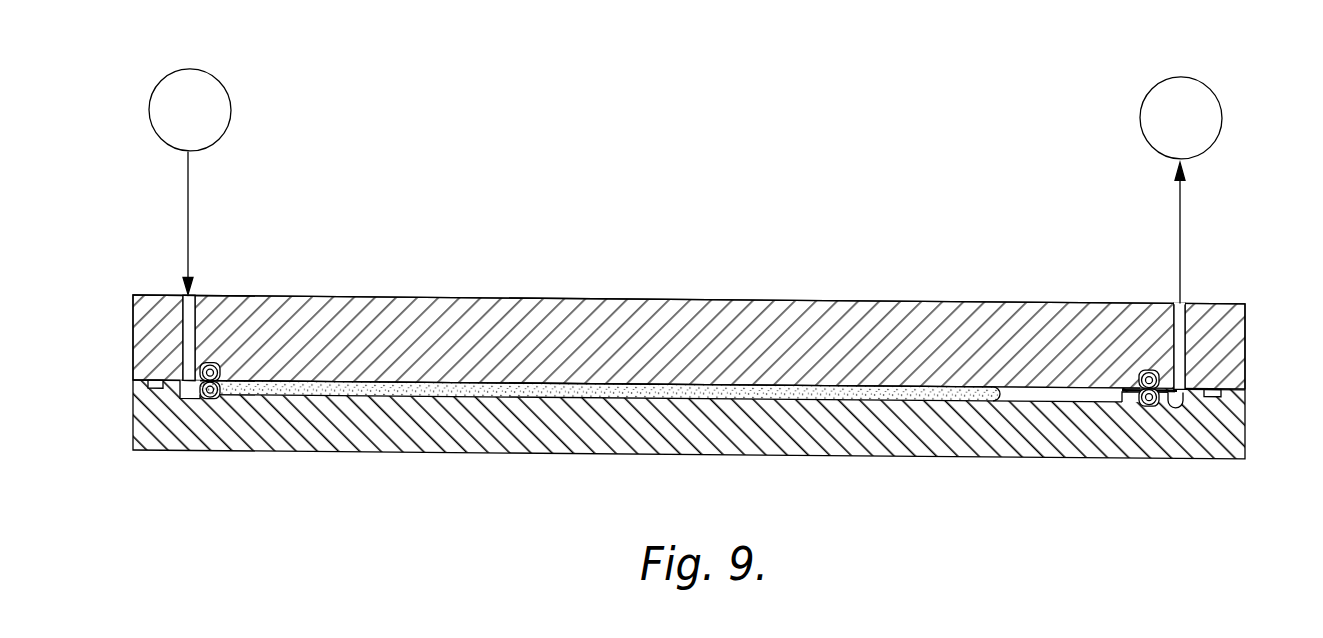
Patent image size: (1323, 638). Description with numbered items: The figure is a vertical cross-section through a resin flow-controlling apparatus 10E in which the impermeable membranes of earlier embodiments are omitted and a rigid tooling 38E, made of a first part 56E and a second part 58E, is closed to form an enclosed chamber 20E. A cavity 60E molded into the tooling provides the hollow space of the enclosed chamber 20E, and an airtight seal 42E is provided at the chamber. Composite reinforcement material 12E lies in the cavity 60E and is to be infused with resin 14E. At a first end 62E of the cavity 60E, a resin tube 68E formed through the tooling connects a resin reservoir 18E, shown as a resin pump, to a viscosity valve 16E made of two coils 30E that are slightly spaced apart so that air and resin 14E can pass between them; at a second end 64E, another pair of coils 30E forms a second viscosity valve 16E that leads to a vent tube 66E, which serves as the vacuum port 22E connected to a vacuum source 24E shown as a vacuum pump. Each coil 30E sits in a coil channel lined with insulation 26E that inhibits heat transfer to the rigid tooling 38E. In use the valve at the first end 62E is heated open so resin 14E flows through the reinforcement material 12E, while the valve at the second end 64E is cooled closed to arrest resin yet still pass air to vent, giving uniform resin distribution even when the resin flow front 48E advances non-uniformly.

The resin flow-controlling apparatus 10E is at (595, 96).
The composite reinforcement material 12E is at (1033, 386).
The resin 14E is at (940, 381).
The viscosity valve 16E is at (213, 369).
The resin reservoir 18E is at (212, 75).
The enclosed chamber 20E is at (870, 378).
The vacuum port 22E is at (1183, 294).
The vacuum source 24E is at (1154, 76).
The insulation 26E is at (220, 380).
The coil 30E is at (217, 369).
The rigid tooling 38E is at (623, 295).
The airtight seal 42E is at (148, 384).
The resin flow front 48E is at (1014, 392).
The first part 56E is at (565, 430).
The second part 58E is at (477, 295).
The cavity 60E is at (384, 383).
The first end 62E is at (193, 387).
The second end 64E is at (1191, 394).
The vent tube 66E is at (1180, 330).
The resin tube 68E is at (188, 312).